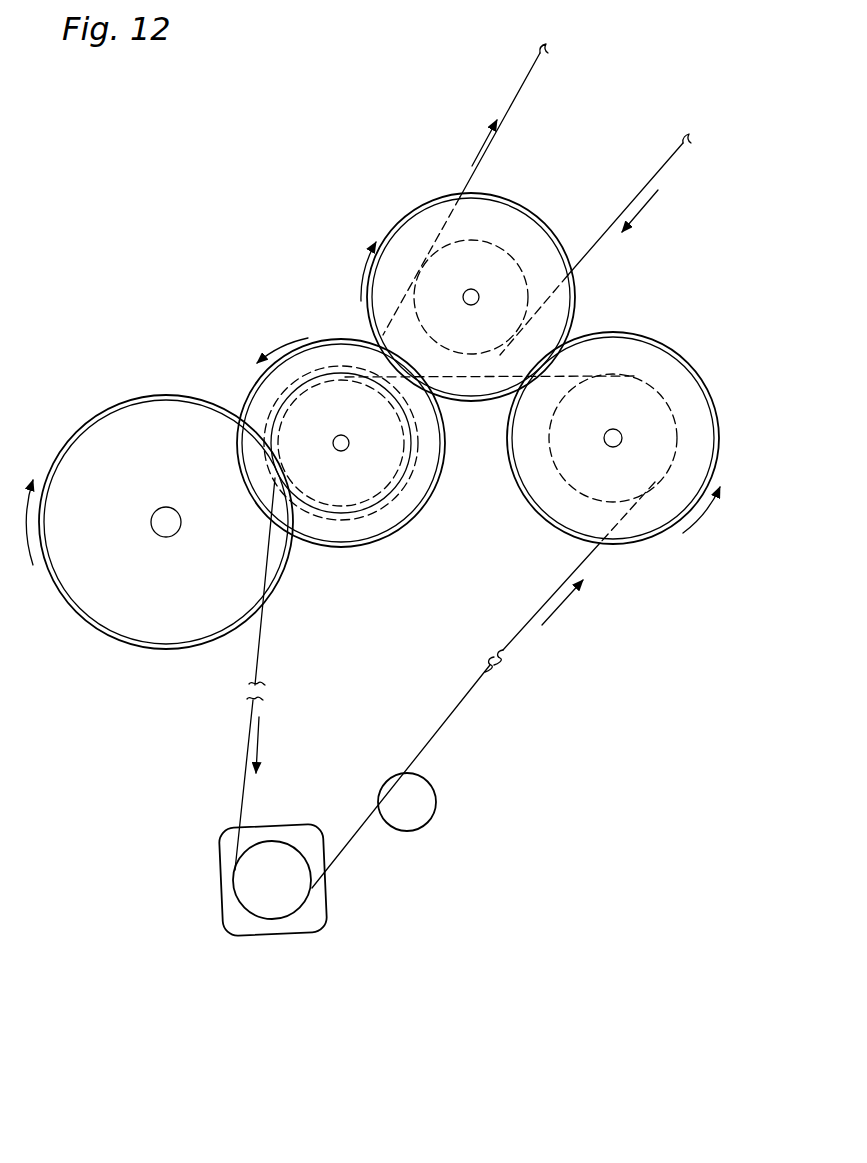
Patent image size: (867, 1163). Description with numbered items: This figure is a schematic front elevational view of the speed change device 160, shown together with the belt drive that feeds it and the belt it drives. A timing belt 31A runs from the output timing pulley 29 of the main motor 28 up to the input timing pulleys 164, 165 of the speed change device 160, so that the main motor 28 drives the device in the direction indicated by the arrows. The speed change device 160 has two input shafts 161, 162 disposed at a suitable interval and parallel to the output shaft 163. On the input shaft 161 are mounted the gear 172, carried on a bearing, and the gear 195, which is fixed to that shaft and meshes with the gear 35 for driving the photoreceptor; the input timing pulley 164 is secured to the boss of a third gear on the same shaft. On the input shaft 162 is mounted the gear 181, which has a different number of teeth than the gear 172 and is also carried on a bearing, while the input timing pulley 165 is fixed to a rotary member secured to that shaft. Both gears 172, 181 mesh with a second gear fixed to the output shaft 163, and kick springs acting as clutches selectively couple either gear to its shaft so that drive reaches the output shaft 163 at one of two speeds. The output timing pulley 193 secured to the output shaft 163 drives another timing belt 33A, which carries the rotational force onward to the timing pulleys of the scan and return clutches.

The main motor 28 is at (250, 937).
The output timing pulley 29 is at (297, 912).
The timing belt 31A is at (246, 762).
The timing belt 33A is at (518, 92).
The gear 35 is at (133, 395).
The speed change device 160 is at (265, 337).
The input shaft 161 is at (341, 435).
The input shaft 162 is at (613, 429).
The output shaft 163 is at (471, 289).
The input timing pulley 164 is at (377, 517).
The input timing pulley 165 is at (677, 437).
The gear 172 is at (443, 463).
The gear 181 is at (685, 358).
The output timing pulley 193 is at (513, 253).
The gear 195 is at (407, 483).